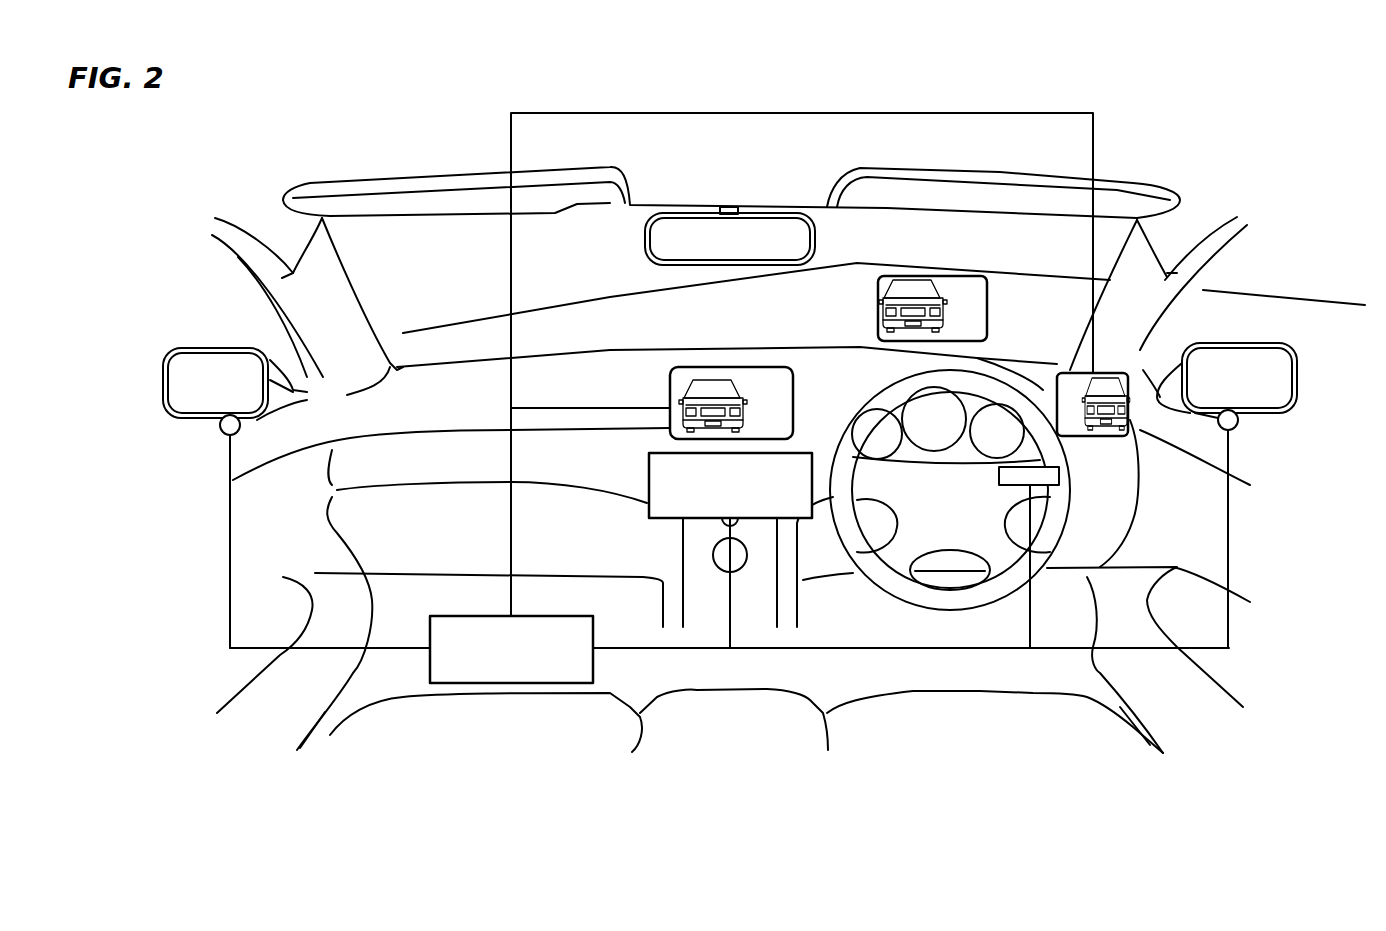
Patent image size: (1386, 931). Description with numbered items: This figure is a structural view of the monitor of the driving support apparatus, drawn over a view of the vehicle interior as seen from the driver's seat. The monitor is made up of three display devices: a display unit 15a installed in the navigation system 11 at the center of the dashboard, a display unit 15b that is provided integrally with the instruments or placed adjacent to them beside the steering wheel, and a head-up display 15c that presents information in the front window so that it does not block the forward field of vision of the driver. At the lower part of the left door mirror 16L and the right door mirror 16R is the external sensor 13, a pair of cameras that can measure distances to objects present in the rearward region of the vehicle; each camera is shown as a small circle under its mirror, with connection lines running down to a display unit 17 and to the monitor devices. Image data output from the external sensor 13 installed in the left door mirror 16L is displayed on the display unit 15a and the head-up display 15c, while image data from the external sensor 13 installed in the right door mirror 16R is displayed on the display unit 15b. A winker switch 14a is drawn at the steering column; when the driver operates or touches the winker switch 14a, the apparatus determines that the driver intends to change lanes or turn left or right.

The navigation system 11 is at (649, 467).
The external sensor 13 is at (222, 430).
The winker switch 14a is at (1059, 477).
The display unit 15a is at (762, 387).
The display unit 15b is at (1070, 383).
The head-up display 15c is at (963, 290).
The left door mirror 16L is at (163, 398).
The right door mirror 16R is at (1297, 390).
The display unit 17 is at (475, 683).